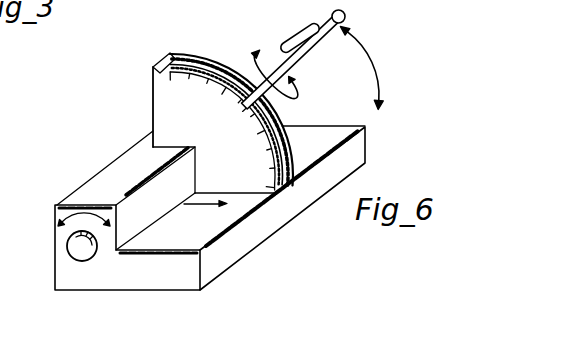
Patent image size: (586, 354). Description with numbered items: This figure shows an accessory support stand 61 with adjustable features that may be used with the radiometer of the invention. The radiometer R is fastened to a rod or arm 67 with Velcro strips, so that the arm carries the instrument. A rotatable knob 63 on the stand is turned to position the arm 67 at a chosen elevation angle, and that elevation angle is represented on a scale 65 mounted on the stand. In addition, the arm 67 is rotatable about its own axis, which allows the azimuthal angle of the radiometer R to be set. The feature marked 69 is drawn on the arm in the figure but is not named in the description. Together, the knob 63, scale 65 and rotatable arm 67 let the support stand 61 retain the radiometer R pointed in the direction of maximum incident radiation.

The support stand 61 is at (81, 181).
The rotatable knob 63 is at (65, 249).
The scale 65 is at (225, 66).
The rod or arm 67 is at (311, 49).
The rotatable sleeve 69 is at (306, 53).
The radiometer R is at (306, 26).